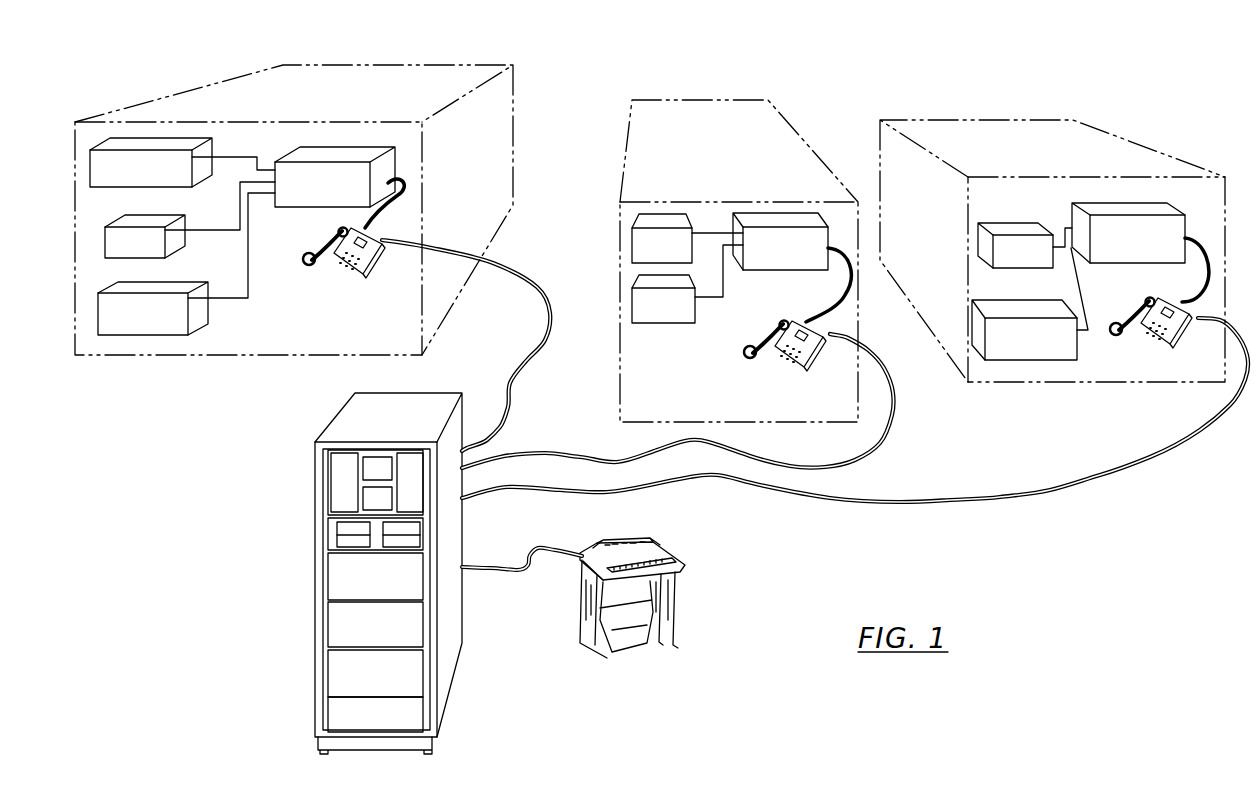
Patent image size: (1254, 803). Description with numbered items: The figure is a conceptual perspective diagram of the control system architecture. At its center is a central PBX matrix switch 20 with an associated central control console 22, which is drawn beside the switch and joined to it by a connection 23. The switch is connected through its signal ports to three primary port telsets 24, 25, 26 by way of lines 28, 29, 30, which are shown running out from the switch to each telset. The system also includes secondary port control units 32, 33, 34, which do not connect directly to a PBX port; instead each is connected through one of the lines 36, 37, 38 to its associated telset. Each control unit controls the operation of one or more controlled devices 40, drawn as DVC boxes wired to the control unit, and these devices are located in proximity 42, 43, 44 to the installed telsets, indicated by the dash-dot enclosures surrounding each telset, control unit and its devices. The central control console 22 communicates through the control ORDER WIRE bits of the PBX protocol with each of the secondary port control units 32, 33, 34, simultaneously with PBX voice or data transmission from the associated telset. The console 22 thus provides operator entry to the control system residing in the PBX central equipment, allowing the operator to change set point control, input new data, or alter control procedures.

The central PBX matrix switch 20 is at (320, 437).
The central control console 22 is at (685, 542).
The terminal cable 23 is at (541, 548).
The primary port telset 24 is at (375, 260).
The primary port telset 25 is at (818, 360).
The primary port telset 26 is at (1184, 338).
The line 28 is at (533, 356).
The line 29 is at (588, 455).
The line 30 is at (1072, 482).
The secondary port control unit 32 is at (352, 152).
The secondary port control unit 33 is at (778, 213).
The secondary port control unit 34 is at (1097, 210).
The line 36 is at (405, 200).
The line 37 is at (835, 283).
The line 38 is at (1207, 253).
The controlled device 40 is at (138, 146).
The proximity 42 is at (436, 82).
The proximity 43 is at (718, 117).
The proximity 44 is at (1050, 128).